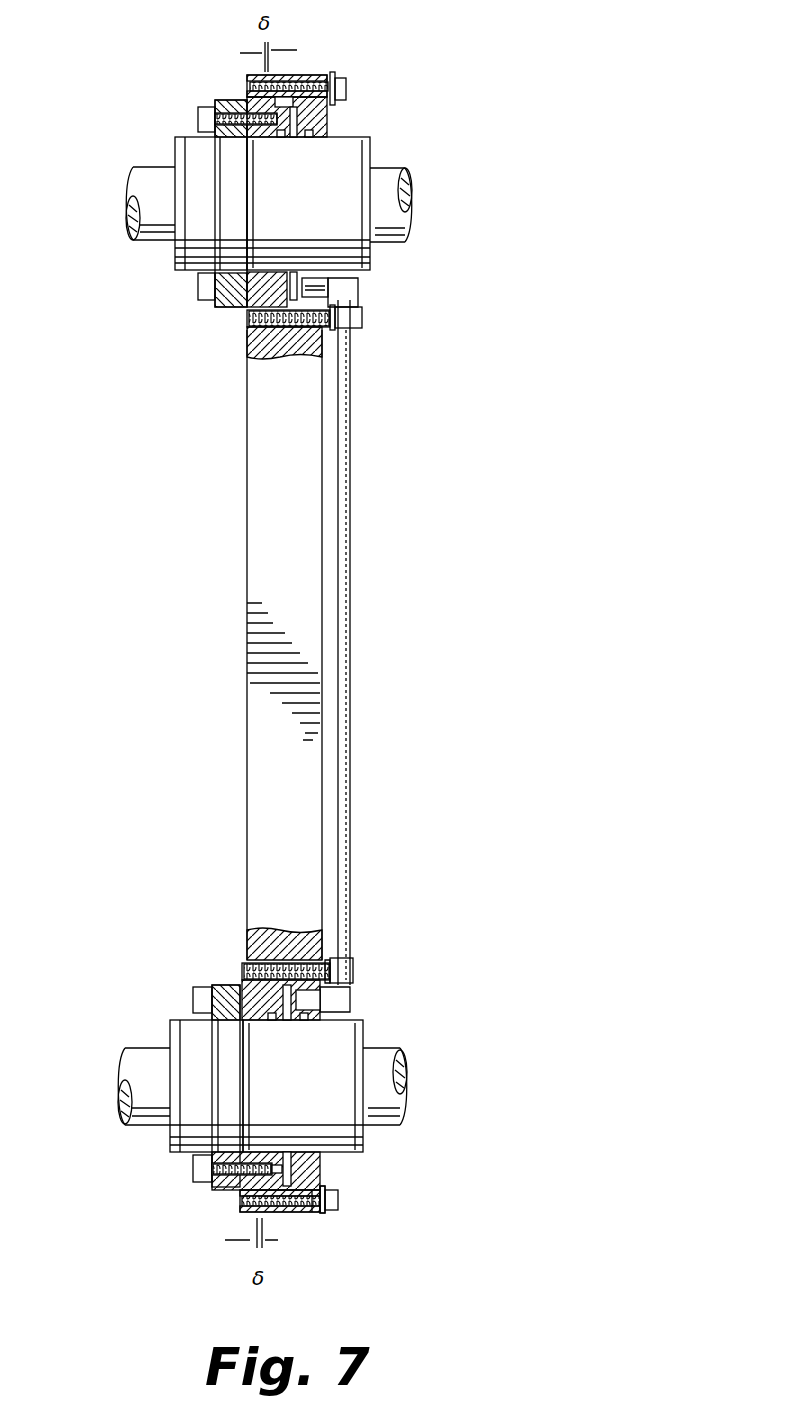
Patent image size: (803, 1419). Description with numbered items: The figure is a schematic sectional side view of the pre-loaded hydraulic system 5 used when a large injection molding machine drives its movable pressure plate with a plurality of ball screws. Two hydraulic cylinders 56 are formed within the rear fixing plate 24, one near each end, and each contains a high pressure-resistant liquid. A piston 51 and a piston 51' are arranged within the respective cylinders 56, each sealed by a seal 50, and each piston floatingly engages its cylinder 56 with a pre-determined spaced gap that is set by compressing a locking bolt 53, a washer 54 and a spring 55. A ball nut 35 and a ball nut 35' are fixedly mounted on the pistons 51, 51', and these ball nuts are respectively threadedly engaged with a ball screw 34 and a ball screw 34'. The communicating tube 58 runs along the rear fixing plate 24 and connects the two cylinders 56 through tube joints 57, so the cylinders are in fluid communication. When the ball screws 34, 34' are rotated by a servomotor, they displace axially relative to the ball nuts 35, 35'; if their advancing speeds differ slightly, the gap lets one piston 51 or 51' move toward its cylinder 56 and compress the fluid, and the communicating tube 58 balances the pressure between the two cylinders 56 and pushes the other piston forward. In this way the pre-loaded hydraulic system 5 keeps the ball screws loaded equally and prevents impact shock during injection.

The pre-loaded hydraulic system 5 is at (407, 118).
The rear fixing plate 24 is at (253, 770).
The ball screw 34 is at (106, 1107).
The ball screw 34' is at (105, 189).
The ball nut 35 is at (162, 1121).
The ball nut 35' is at (162, 175).
The seal 50 is at (320, 1170).
The piston 51 is at (236, 1246).
The piston 51' is at (238, 57).
The locking bolt 53 is at (333, 1192).
The washer 54 is at (334, 1210).
The spring 55 is at (317, 1215).
The hydraulic cylinder 56 is at (290, 1215).
The tube joint 57 is at (350, 993).
The communicating tube 58 is at (350, 760).